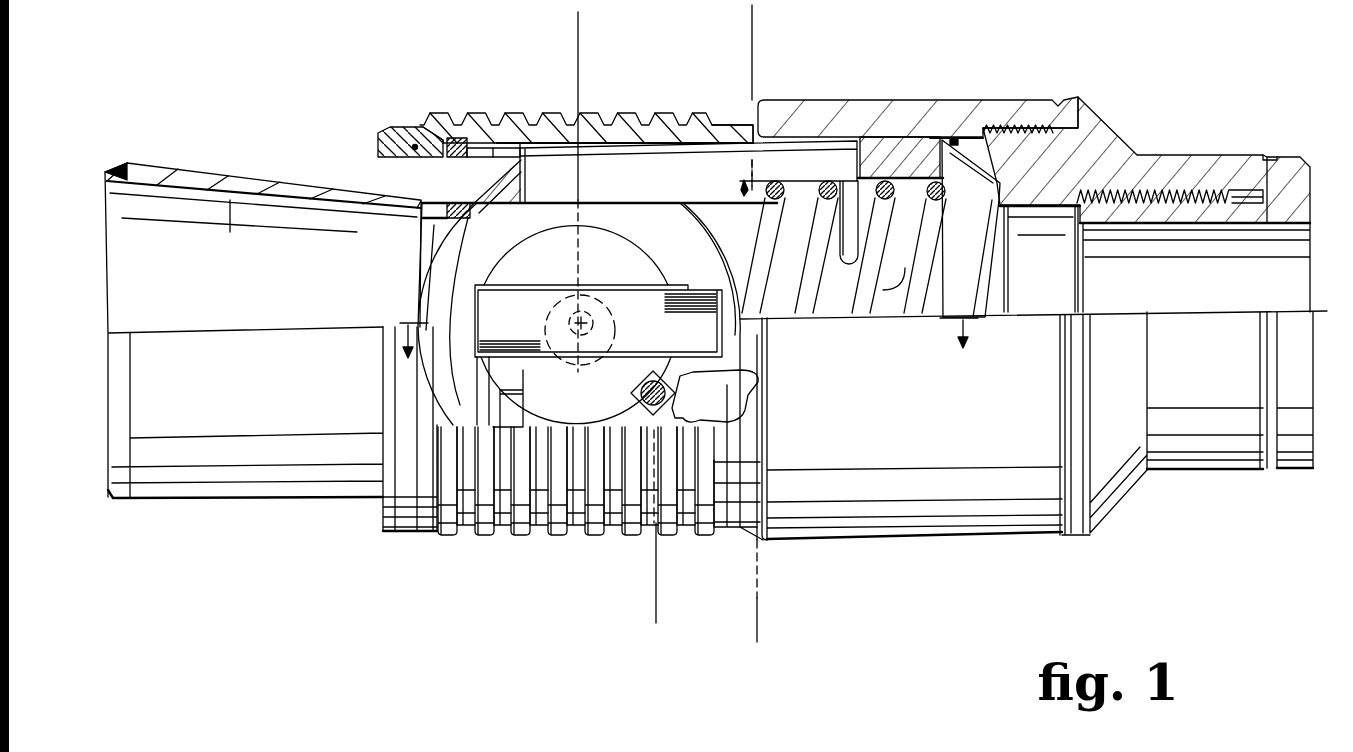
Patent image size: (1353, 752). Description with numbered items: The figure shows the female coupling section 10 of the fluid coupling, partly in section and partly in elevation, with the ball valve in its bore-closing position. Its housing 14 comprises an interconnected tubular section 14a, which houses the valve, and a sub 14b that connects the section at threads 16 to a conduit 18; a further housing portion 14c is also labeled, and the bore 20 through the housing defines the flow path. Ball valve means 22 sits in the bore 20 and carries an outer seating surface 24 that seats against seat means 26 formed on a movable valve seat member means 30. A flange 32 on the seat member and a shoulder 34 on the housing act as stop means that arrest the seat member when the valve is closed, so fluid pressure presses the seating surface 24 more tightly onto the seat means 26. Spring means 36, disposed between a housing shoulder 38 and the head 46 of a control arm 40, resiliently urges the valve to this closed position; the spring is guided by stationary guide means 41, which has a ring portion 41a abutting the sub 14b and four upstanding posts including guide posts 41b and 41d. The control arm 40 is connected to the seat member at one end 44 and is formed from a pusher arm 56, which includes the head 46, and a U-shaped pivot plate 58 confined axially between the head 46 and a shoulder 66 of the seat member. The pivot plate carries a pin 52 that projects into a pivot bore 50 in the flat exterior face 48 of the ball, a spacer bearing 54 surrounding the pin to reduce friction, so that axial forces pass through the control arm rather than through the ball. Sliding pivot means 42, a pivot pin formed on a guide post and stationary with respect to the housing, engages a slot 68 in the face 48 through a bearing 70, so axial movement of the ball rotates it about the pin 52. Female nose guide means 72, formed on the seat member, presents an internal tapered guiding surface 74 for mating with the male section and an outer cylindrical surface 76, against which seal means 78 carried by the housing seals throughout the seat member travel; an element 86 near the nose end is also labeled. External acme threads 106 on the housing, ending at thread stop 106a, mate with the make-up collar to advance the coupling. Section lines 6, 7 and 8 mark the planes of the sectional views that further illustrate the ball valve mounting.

The female coupling section 10 is at (1090, 71).
The housing 14 is at (920, 547).
The tubular section 14a is at (821, 100).
The sub 14b is at (1120, 132).
The body end portion 14c is at (378, 145).
The threads 16 is at (1200, 190).
The conduit 18 is at (1290, 156).
The bore 20 is at (1023, 288).
The ball valve means 22 is at (620, 199).
The outer seating surface 24 is at (420, 250).
The seat means 26 is at (448, 215).
The valve seat member means 30 is at (414, 146).
The flange 32 is at (482, 153).
The shoulder 34 is at (504, 146).
The spring means 36 is at (835, 181).
The shoulder 38 is at (997, 197).
The control arm 40 is at (565, 381).
The guide means 41 is at (835, 280).
The ring portion 41a is at (905, 140).
The guide post 41b is at (744, 194).
The guide post 41d is at (685, 405).
The sliding pivot means 42 is at (600, 363).
The end 44 is at (478, 368).
The head 46 is at (752, 325).
The flat exterior face 48 is at (591, 273).
The pivot bore 50 is at (594, 328).
The pin 52 is at (570, 331).
The spacer bearing 54 is at (546, 313).
The pusher arm 56 is at (661, 270).
The pivot plate 58 is at (534, 285).
The shoulder 66 is at (472, 426).
The slot 68 is at (637, 362).
The bearing 70 is at (682, 386).
The female nose guide means 72 is at (265, 508).
The tapered female guiding surface 74 is at (229, 232).
The outer cylindrical surface 76 is at (207, 173).
The seal means 78 is at (452, 140).
The left end body 86 is at (105, 172).
The external threads 106 is at (652, 113).
The thread stop 106a is at (748, 118).
The section line 6- 6 is at (571, 43).
The section line 7- 7 is at (764, 14).
The section line 8- 8 is at (689, 353).